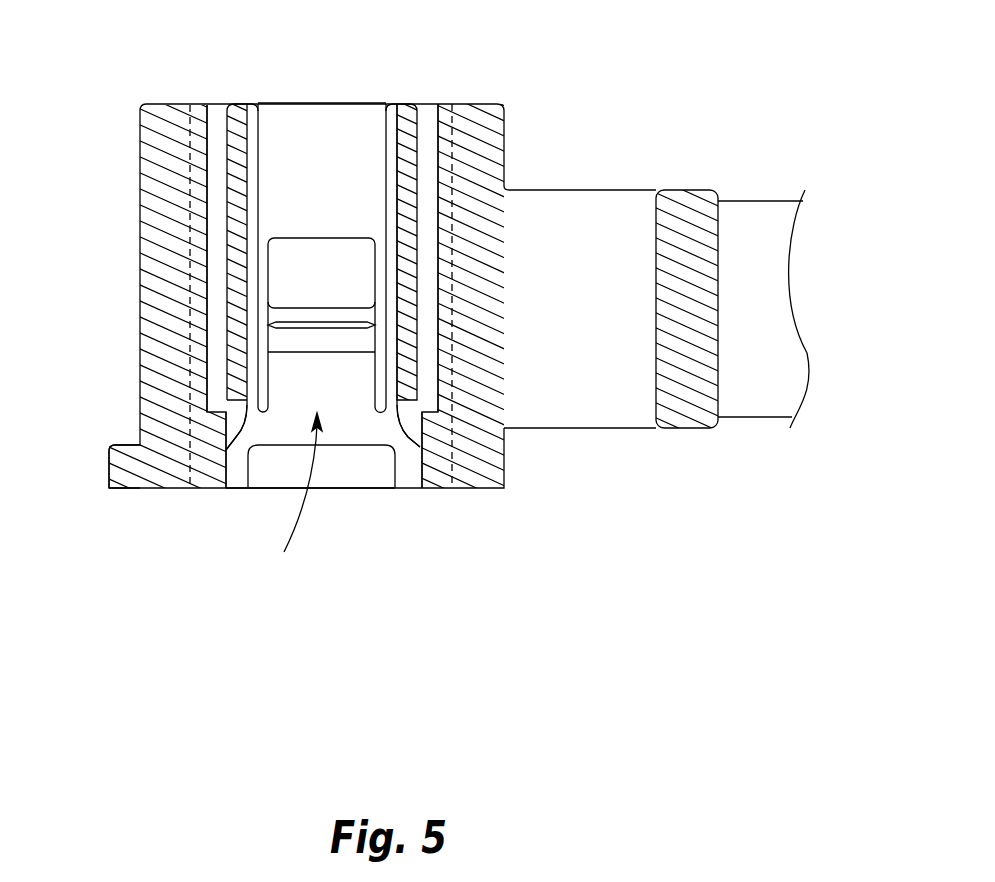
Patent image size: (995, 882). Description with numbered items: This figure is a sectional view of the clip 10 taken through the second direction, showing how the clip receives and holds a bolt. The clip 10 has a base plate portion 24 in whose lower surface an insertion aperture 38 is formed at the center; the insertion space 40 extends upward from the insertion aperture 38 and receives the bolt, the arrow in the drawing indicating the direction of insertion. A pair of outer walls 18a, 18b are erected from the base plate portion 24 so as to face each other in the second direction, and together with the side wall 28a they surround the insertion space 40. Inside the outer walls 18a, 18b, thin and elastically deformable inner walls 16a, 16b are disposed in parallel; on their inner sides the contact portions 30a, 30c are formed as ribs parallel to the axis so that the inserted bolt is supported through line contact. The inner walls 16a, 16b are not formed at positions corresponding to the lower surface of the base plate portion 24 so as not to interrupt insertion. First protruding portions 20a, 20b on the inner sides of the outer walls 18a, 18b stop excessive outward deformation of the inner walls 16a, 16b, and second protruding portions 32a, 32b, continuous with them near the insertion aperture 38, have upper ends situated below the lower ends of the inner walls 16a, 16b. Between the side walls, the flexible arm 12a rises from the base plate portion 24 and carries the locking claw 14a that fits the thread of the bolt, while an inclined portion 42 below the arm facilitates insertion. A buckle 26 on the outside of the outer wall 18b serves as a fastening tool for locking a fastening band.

The clip 10 is at (427, 648).
The flexible arm 12a is at (318, 253).
The locking claw 14a is at (356, 330).
The inner wall 16a is at (240, 108).
The inner wall 16b is at (407, 112).
The outer wall 18a is at (150, 268).
The outer wall 18b is at (487, 137).
The first protruding portion 20a is at (200, 117).
The first protruding portion 20b is at (440, 110).
The base plate portion 24 is at (115, 462).
The buckle 26 is at (686, 205).
The side wall 28a is at (300, 125).
The contact portion 30a is at (252, 180).
The contact portion 30c is at (392, 182).
The second protruding portion 32a is at (212, 468).
The second protruding portion 32b is at (433, 470).
The insertion aperture 38 is at (271, 488).
The insertion space 40 is at (296, 498).
The inclined portion 42 is at (337, 470).